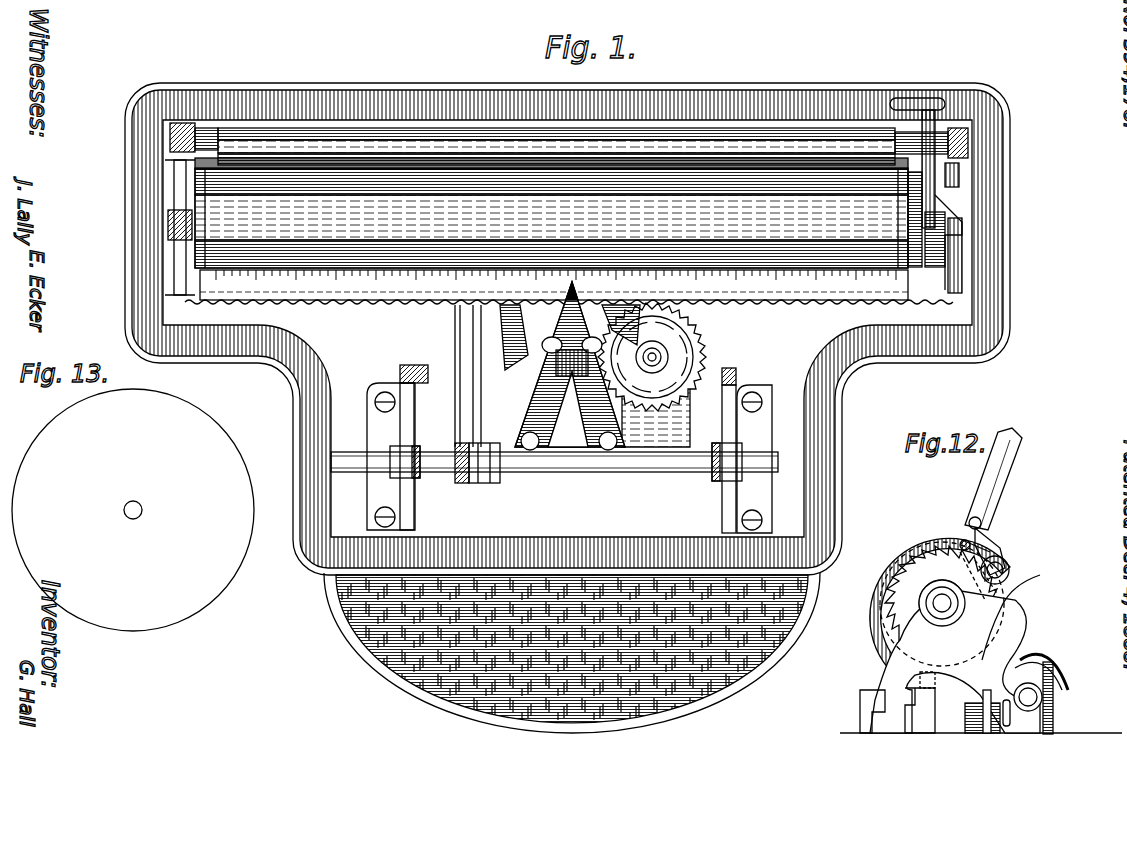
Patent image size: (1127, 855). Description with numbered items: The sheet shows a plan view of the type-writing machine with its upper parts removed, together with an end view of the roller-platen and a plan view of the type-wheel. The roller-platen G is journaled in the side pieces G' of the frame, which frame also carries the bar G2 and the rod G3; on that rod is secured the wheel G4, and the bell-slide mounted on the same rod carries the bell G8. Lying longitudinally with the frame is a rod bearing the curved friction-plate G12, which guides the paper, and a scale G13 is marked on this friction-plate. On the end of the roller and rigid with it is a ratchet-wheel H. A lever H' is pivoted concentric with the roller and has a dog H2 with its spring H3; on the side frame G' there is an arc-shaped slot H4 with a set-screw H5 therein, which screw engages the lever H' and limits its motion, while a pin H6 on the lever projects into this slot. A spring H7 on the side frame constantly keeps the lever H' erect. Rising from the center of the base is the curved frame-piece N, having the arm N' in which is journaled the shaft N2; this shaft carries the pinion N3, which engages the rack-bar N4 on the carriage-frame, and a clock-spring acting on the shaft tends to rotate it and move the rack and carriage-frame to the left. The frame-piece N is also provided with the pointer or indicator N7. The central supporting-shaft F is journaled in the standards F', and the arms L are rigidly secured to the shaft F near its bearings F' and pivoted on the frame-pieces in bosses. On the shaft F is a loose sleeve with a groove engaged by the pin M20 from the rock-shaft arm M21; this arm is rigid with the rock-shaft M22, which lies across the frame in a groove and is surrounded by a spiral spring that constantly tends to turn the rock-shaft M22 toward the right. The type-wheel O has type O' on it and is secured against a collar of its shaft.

In FIG. 1, the roller-platen G is at (551, 218).
In FIG. 12, the side pieces of the frame G' is at (955, 637).
In FIG. 12, the bar G2 is at (875, 715).
In FIG. 12, the rod G3 is at (1030, 697).
In FIG. 12, the wheel G4 is at (1052, 684).
In FIG. 12, the bell G8 is at (1036, 660).
In FIG. 12, the stop block G'' is at (883, 694).
In FIG. 12, the curved friction-plate G12 is at (878, 605).
In FIG. 1, the scale G13 is at (688, 270).
In FIG. 12, the ratchet-wheel H is at (942, 603).
In FIG. 1, the lever H' is at (968, 163).
In FIG. 12, the lever H' is at (995, 479).
In FIG. 1, the dog H2 is at (918, 193).
In FIG. 12, the dog H2 is at (972, 535).
In FIG. 12, the spring H3 is at (987, 537).
In FIG. 12, the arc-shaped slot H4 is at (990, 549).
In FIG. 1, the set-screw H5 is at (958, 177).
In FIG. 12, the set-screw H5 is at (1010, 567).
In FIG. 12, the pin H6 is at (960, 547).
In FIG. 12, the spring H7 is at (1012, 600).
In FIG. 1, the curved frame-piece N is at (556, 366).
In FIG. 1, the arm N' is at (671, 357).
In FIG. 1, the shaft N2 is at (655, 362).
In FIG. 1, the pinion N3 is at (660, 360).
In FIG. 1, the rack-bar N4 is at (790, 306).
In FIG. 1, the pointer or indicator N7 is at (574, 283).
In FIG. 1, the pin M20 is at (457, 484).
In FIG. 1, the rock-shaft arm M21 is at (476, 484).
In FIG. 1, the rock-shaft M22 is at (462, 344).
In FIG. 1, the central supporting-shaft F is at (554, 479).
In FIG. 1, the standards F' is at (754, 459).
In FIG. 1, the left bracket F'' is at (391, 456).
In FIG. 13, the type-wheel O is at (133, 510).
In FIG. 13, the type O' is at (192, 509).